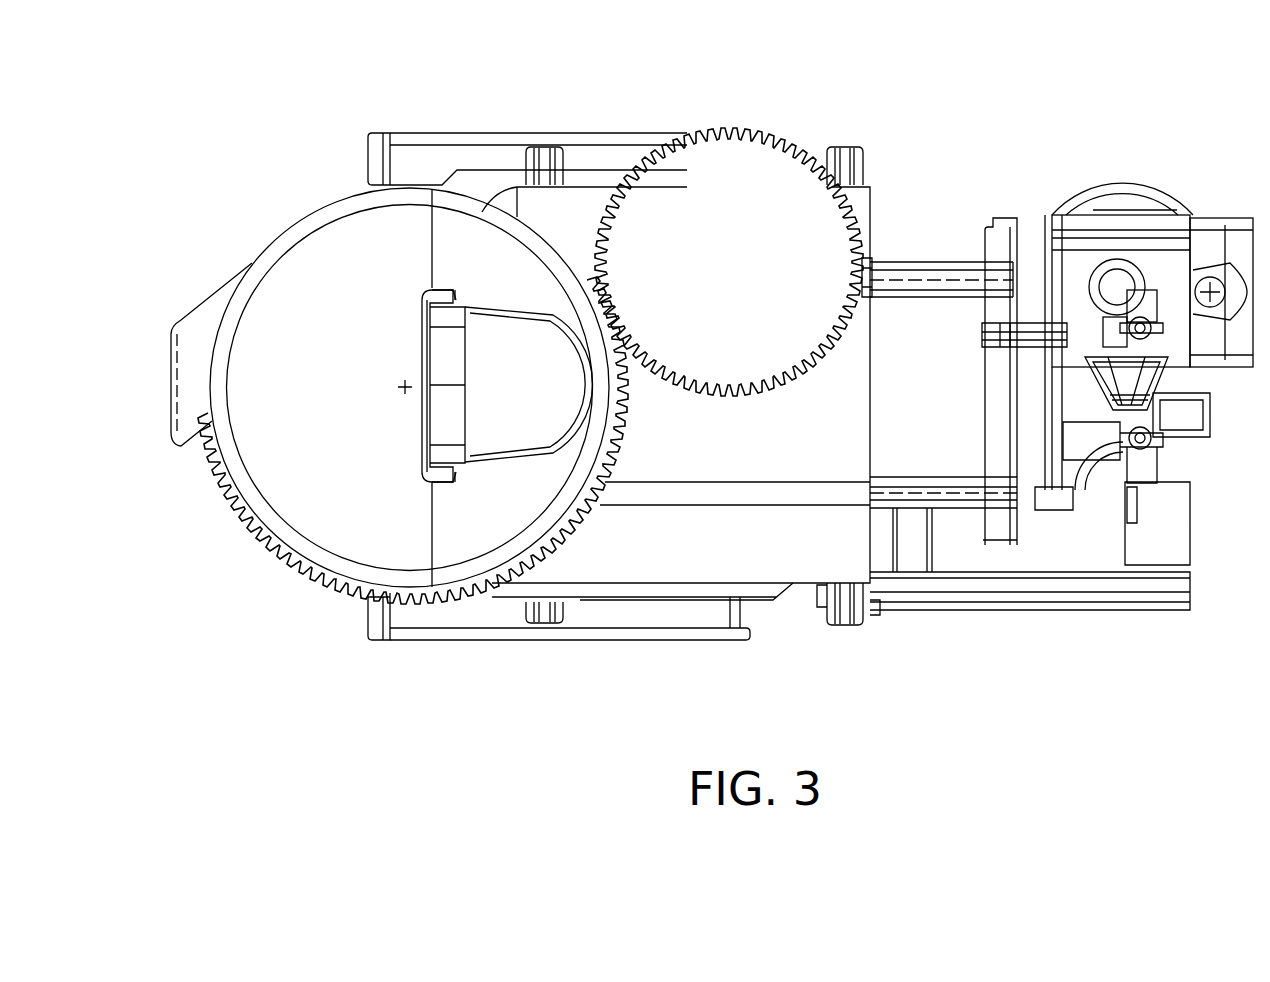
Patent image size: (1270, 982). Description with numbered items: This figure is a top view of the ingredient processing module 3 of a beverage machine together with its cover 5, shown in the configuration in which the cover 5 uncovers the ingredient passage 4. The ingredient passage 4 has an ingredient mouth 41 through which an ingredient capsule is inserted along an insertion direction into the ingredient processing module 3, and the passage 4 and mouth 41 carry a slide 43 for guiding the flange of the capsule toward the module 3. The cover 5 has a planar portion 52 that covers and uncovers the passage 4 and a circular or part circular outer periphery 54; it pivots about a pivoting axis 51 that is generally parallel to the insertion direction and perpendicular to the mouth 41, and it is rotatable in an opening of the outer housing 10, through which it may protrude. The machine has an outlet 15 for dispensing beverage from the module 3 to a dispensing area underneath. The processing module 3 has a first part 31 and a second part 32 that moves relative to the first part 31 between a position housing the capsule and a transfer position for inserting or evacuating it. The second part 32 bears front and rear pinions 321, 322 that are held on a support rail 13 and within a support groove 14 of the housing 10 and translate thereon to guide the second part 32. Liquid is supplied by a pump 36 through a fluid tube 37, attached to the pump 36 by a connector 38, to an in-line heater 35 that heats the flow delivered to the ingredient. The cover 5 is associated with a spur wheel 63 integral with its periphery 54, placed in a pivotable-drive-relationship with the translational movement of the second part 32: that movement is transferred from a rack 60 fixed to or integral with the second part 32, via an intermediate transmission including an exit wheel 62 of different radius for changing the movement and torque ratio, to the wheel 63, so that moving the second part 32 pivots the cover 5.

The ingredient processing module 3 is at (1078, 103).
The ingredient passage 4 is at (494, 418).
The cover 5 is at (294, 335).
The outer housing 10 is at (368, 640).
The support rail 13 is at (1057, 598).
The support groove 14 is at (445, 157).
The outlet 15 is at (183, 440).
The first part 31 is at (905, 305).
The second part 32 is at (803, 573).
The in-line heater 35 is at (930, 419).
The pump 36 is at (1117, 282).
The fluid tube 37 is at (1092, 493).
The connector 38 is at (1135, 395).
The ingredient mouth 41 is at (543, 320).
The slide 43 is at (437, 290).
The pivoting axis 51 is at (398, 387).
The planar portion 52 is at (290, 270).
The outer periphery 54 is at (325, 195).
The rack 60 is at (875, 268).
The exit wheel 62 is at (797, 392).
The wheel 63 is at (630, 400).
The front pinion 321 is at (857, 148).
The rear pinion 322 is at (560, 150).